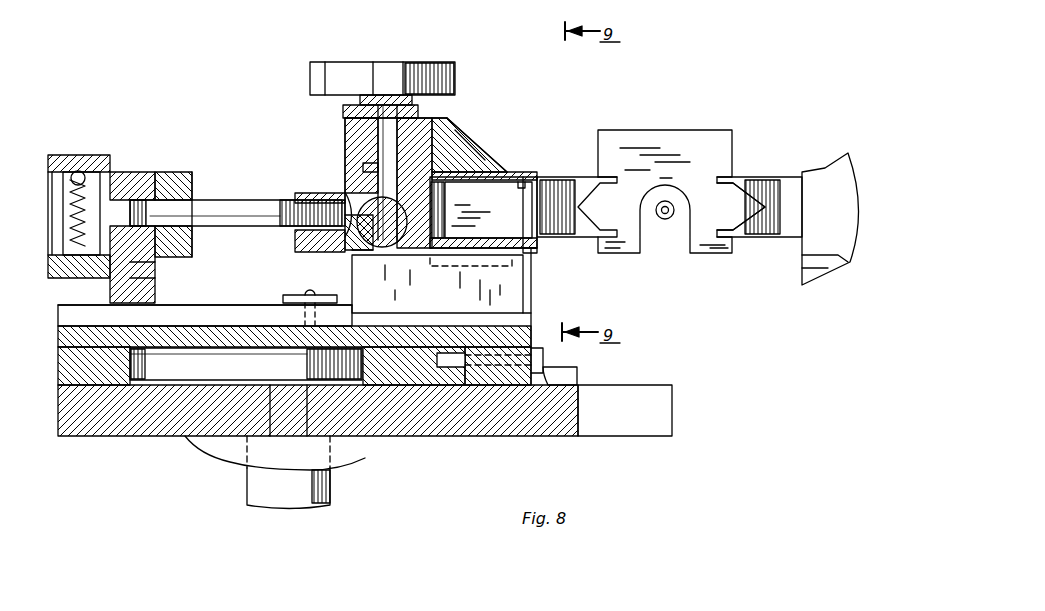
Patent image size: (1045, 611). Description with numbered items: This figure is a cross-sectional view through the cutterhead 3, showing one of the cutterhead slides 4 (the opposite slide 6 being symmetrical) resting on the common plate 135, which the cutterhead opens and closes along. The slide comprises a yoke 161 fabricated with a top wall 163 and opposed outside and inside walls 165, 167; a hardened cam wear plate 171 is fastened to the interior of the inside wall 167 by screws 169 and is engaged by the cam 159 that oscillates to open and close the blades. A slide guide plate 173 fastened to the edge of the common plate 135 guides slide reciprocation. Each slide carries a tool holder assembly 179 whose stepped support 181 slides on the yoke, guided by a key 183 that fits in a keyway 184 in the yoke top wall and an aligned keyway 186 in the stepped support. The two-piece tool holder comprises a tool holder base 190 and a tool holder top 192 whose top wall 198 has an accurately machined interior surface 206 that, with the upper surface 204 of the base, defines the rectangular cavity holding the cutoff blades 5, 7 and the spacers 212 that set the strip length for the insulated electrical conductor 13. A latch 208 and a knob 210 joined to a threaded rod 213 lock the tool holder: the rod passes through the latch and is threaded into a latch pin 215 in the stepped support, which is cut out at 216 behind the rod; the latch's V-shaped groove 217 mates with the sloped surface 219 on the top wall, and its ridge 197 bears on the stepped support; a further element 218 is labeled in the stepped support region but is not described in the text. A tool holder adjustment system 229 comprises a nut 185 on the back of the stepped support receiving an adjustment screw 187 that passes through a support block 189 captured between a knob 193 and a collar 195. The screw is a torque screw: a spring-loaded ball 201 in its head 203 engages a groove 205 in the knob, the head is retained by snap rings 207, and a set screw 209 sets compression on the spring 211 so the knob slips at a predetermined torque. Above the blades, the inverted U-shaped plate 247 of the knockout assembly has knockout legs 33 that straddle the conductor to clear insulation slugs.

The cutterhead 3 is at (584, 291).
The cutterhead slide 4 is at (455, 450).
The cutoff blade 5 is at (604, 182).
The cutterhead slide 6 is at (858, 168).
The cutoff blade 7 is at (776, 186).
The insulated electrical conductor 13 is at (661, 226).
The knockout legs 33 is at (610, 250).
The common plate 135 is at (137, 430).
The cam 159 is at (190, 365).
The yoke 161 is at (60, 390).
The top wall 163 is at (233, 326).
The outside wall 165 is at (103, 380).
The inside wall 167 is at (498, 385).
The screws 169 is at (578, 394).
The cam wear plate 171 is at (418, 380).
The slide guide plate 173 is at (576, 370).
The tool holder assembly 179 is at (470, 85).
The stepped support 181 is at (422, 235).
The key 183 is at (525, 290).
The keyway 184 is at (222, 326).
The nut 185 is at (300, 193).
The keyway 186 is at (345, 262).
The adjustment screw 187 is at (255, 200).
The support block 189 is at (170, 176).
The tool holder base 190 is at (532, 246).
The tool holder top 192 is at (455, 158).
The knob 193 is at (148, 266).
The collar 195 is at (195, 184).
The ridge 197 is at (363, 168).
The top wall 198 is at (492, 175).
The spring-loaded ball 201 is at (96, 156).
The head 203 is at (56, 258).
The upper surface 204 is at (458, 238).
The groove 205 is at (47, 172).
The interior surface 206 is at (500, 190).
The snap rings 207 is at (122, 170).
The latch 208 is at (345, 133).
The set screw 209 is at (148, 280).
The knob 210 is at (385, 76).
The spring 211 is at (130, 218).
The spacers 212 is at (540, 186).
The threaded rod 213 is at (343, 112).
The latch pin 215 is at (352, 255).
The cut out 216 is at (347, 205).
The V-shaped groove 217 is at (462, 138).
The seal 218 is at (463, 240).
The sloped surface 219 is at (470, 166).
The tool holder adjustment system 229 is at (101, 140).
The inverted U-shaped plate 247 is at (690, 131).